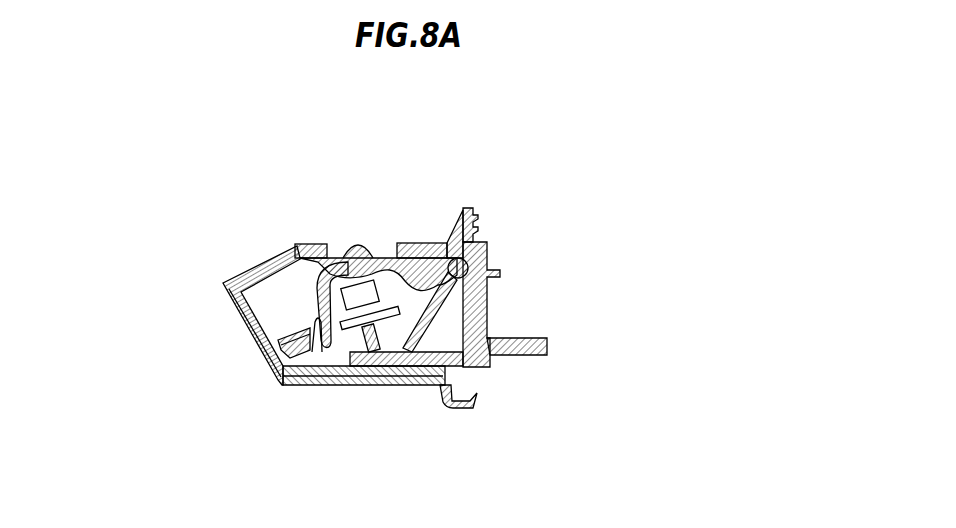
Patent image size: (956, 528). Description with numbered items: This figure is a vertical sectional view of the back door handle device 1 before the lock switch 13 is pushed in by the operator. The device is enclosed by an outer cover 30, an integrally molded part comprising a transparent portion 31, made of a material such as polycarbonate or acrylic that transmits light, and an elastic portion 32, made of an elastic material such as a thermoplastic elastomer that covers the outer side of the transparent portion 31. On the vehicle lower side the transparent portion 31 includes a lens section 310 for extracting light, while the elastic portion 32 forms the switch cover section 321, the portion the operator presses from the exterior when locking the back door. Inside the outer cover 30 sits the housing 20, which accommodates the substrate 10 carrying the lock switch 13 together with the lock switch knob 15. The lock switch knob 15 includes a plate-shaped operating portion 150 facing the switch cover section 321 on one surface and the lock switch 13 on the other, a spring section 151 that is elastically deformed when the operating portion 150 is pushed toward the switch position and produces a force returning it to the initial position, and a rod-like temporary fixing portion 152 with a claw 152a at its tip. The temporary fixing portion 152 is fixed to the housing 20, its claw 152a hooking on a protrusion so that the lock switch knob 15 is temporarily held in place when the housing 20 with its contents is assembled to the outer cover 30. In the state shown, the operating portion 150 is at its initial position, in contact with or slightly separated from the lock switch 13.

The back door handle device 1 is at (500, 160).
The switch cover section 321 is at (360, 291).
The lock switch 13 is at (343, 262).
The lens section 310 is at (270, 262).
The operating portion 150 is at (360, 266).
The temporary fixing portion 152 is at (317, 300).
The claw 152a is at (318, 358).
The substrate 10 is at (278, 339).
The housing 20 is at (277, 365).
The lock switch knob 15 is at (473, 263).
The spring section 151 is at (430, 312).
The outer cover 30 is at (434, 431).
The transparent portion 31 is at (428, 388).
The elastic portion 32 is at (387, 388).